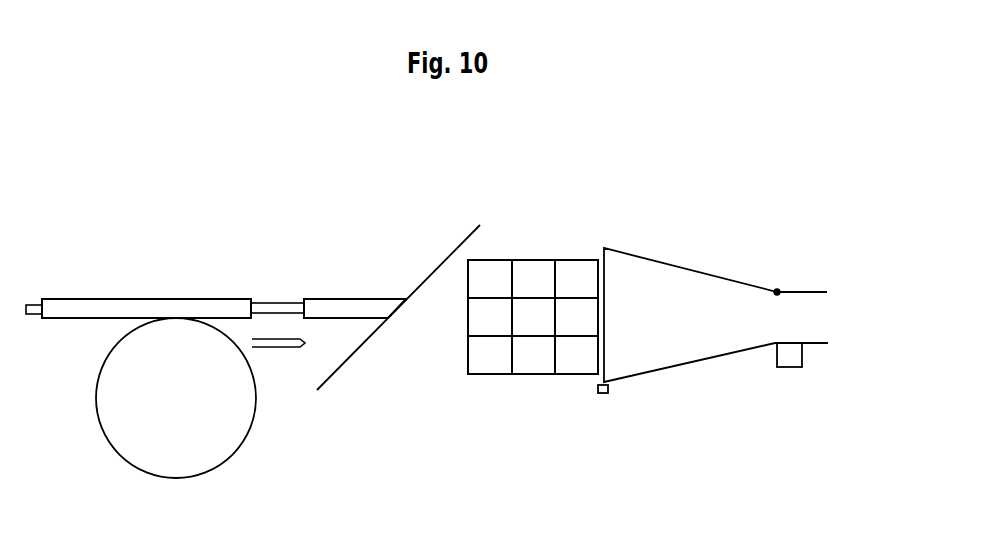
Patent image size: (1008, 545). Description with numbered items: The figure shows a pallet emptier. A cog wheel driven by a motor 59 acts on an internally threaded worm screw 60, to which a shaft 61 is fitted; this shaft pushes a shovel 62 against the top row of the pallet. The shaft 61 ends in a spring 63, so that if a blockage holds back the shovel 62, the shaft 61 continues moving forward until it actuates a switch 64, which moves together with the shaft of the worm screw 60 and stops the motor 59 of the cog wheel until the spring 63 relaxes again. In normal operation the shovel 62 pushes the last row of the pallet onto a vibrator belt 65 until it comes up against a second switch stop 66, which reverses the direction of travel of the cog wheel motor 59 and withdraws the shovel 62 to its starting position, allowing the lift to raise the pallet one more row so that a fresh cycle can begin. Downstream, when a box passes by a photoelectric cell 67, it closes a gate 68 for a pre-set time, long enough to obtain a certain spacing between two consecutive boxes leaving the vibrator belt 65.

The motor 59 is at (176, 398).
The internally threaded worm screw 60 is at (138, 288).
The shaft 61 is at (277, 308).
The shovel 62 is at (417, 299).
The spring 63 is at (355, 288).
The switch 64 is at (278, 360).
The vibrator belt 65 is at (648, 315).
The second switch stop 66 is at (606, 409).
The photoelectric cell 67 is at (786, 373).
The gate 68 is at (779, 294).